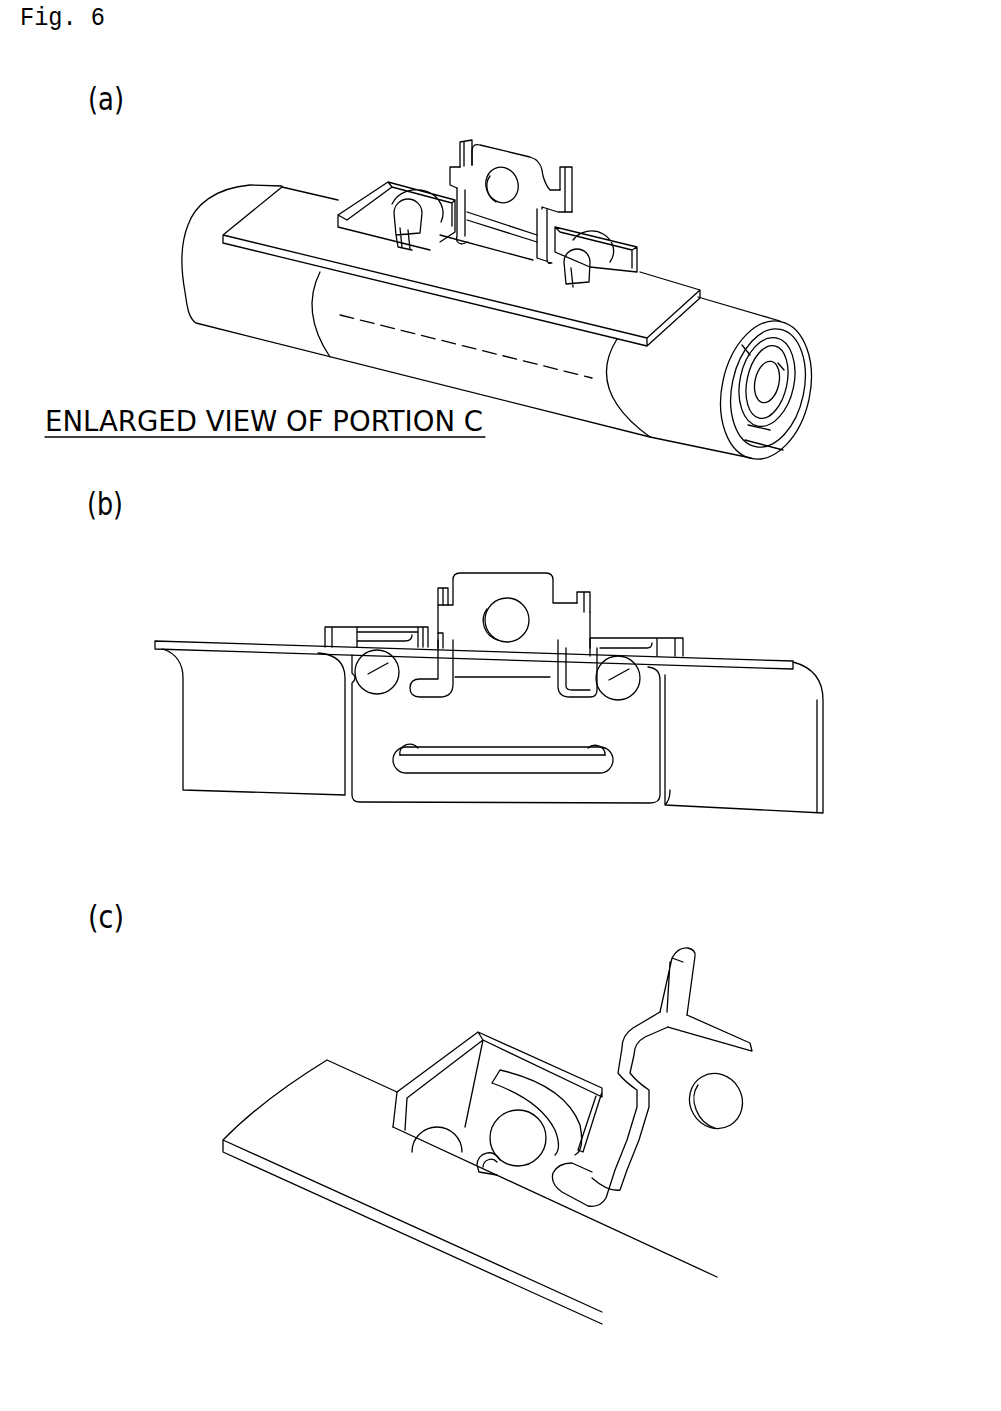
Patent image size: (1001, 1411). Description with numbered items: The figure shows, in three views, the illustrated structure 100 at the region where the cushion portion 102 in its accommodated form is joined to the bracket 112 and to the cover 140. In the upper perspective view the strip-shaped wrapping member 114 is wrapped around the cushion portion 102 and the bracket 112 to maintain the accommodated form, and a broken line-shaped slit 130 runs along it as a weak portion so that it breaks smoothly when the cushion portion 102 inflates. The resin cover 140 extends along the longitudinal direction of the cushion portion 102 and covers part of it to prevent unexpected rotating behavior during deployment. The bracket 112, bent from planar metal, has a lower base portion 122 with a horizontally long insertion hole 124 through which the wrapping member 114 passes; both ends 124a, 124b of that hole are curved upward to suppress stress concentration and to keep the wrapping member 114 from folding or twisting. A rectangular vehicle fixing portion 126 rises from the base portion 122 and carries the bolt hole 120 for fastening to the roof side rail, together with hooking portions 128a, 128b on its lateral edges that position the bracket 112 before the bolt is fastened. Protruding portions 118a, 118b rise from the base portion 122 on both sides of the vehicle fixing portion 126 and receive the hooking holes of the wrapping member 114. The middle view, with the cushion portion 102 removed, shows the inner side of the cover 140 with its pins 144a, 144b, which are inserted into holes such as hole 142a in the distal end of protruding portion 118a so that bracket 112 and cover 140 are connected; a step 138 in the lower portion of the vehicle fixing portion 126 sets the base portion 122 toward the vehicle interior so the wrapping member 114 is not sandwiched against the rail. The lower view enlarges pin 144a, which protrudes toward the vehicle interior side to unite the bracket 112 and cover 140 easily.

The pipe fixing structure 100 is at (219, 150).
The cushion portion 102 is at (740, 306).
The bracket 112 is at (474, 146).
The wrapping member 114 is at (522, 396).
The protruding portion 118a is at (396, 204).
The protruding portion 118b is at (590, 240).
The bolt hole 120 is at (510, 177).
The base portion 122 is at (615, 800).
The insertion hole 124 is at (523, 770).
The end of insertion hole 124a is at (408, 746).
The end of insertion hole 124b is at (593, 744).
The vehicle fixing portion 126 is at (496, 155).
The hooking portion 128a is at (464, 146).
The hooking portion 128b is at (578, 170).
The slit 130 is at (336, 314).
The step 138 is at (483, 675).
The cover 140 is at (279, 186).
The hole 142a is at (532, 1103).
The pin 144a is at (402, 222).
The pin 144b is at (575, 273).